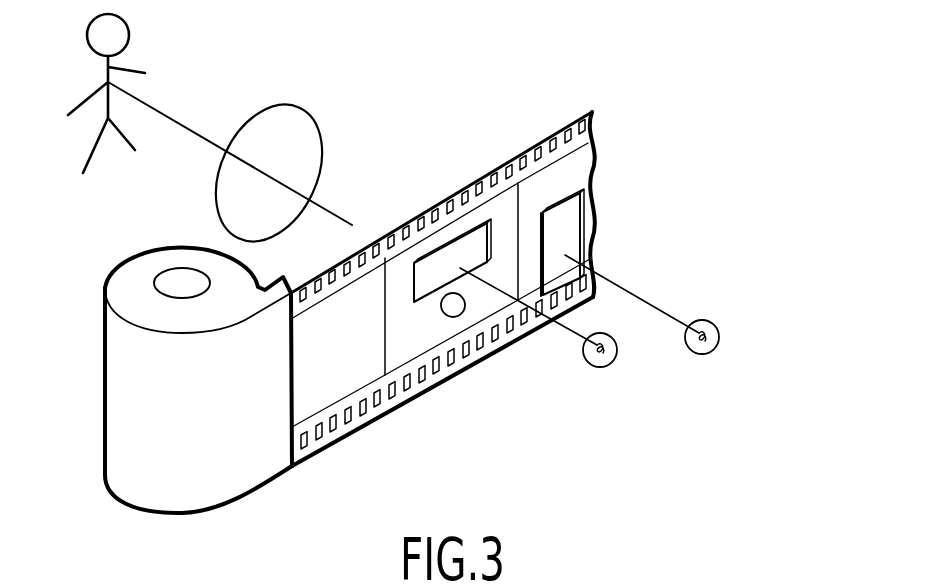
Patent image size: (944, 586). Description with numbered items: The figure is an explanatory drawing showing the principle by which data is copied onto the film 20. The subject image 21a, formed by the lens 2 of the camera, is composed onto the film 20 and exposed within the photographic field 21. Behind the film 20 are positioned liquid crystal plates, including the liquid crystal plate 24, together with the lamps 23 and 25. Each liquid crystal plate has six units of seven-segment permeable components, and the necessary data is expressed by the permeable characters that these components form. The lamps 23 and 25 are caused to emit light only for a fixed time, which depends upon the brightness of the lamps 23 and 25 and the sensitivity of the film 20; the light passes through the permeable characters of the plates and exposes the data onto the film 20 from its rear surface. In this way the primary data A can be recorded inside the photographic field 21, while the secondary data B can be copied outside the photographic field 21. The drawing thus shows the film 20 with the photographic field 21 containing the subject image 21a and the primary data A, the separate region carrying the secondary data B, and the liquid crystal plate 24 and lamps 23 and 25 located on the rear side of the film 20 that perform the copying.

The lens 2 is at (295, 107).
The film 20 is at (552, 140).
The photographic field 21 is at (470, 222).
The subject image 21a is at (455, 317).
The lamp 23 is at (613, 363).
The liquid crystal plate 24 is at (575, 213).
The lamp 25 is at (717, 350).
The primary data A is at (390, 256).
The secondary data B is at (540, 184).